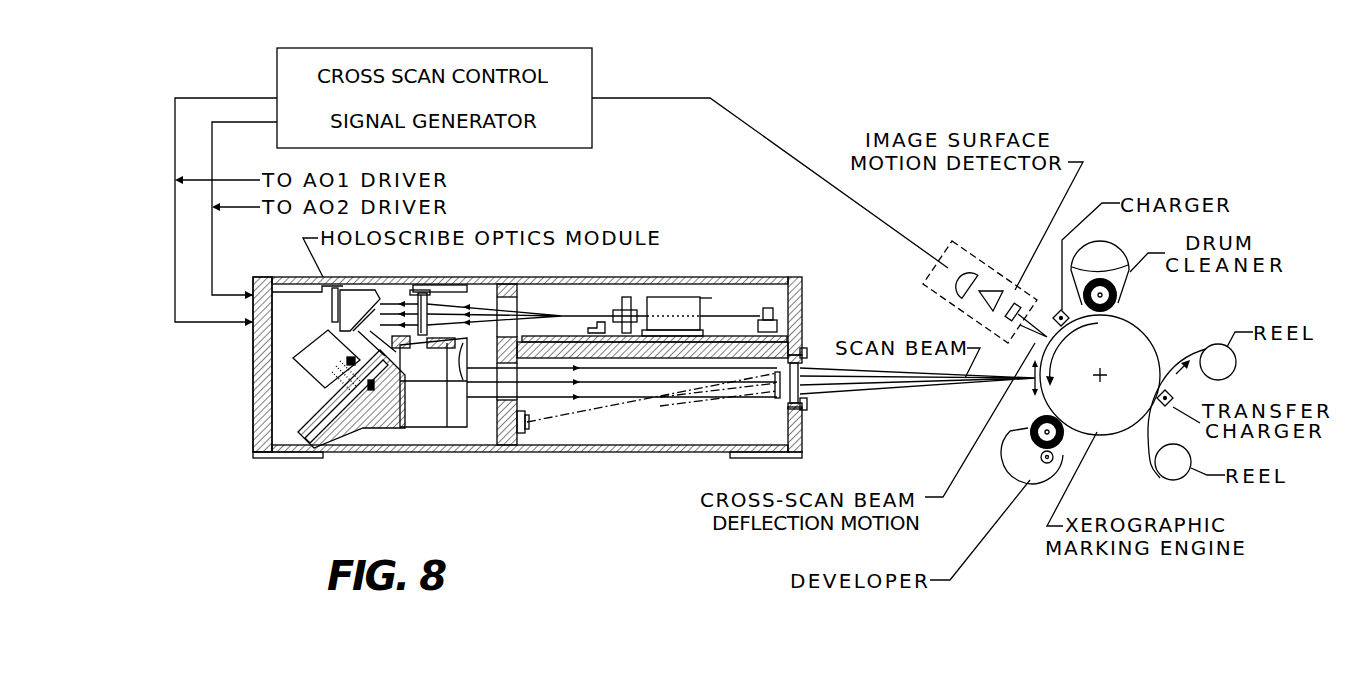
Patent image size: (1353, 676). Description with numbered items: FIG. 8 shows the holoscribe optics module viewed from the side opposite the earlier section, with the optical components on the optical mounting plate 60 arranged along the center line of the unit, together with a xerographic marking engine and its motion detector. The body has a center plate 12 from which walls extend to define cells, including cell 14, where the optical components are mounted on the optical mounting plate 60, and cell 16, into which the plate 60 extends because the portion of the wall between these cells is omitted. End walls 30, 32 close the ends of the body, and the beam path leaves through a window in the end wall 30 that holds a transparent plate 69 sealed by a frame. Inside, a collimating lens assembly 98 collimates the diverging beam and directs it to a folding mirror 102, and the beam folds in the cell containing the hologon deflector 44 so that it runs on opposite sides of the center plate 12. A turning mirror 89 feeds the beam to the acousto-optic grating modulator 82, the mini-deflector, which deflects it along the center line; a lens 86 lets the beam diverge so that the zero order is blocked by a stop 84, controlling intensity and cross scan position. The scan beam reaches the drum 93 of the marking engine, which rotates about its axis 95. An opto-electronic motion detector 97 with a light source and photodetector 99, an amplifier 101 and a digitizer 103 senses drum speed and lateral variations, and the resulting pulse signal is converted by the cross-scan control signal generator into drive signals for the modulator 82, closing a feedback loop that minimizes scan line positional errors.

The center plate 12 is at (618, 358).
The cell 14 is at (777, 288).
The cell 16 is at (596, 305).
The end wall 30 is at (803, 323).
The end wall 32 is at (253, 393).
The deflector 44 is at (372, 422).
The optical mounting plate 60 is at (535, 340).
The transparent plate 69 is at (806, 392).
The acousto-optic diffraction grating modulator 82 is at (690, 293).
The stop 84 is at (600, 330).
The lens 86 is at (627, 330).
The turning mirror 89 is at (778, 318).
The drum 93 is at (1146, 331).
The axis 95 is at (1100, 375).
The opto-electronic motion detector 97 is at (950, 260).
The collimating lens assembly 98 is at (421, 293).
The light source and photodetector 99 is at (1028, 310).
The amplifier 101 is at (984, 304).
The folding mirror 102 is at (352, 294).
The digitizer 103 is at (976, 268).